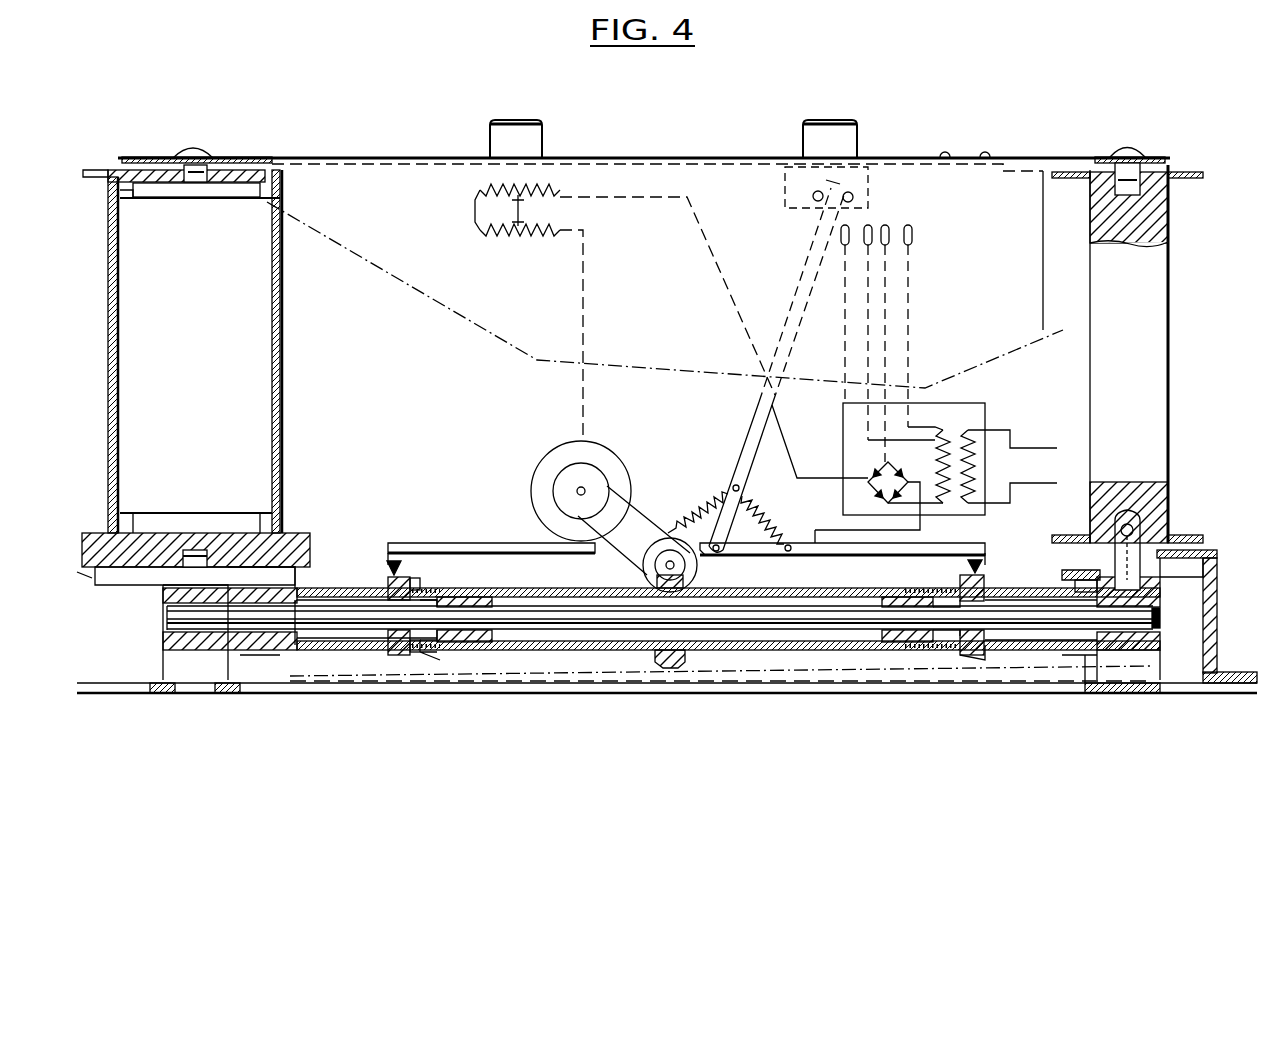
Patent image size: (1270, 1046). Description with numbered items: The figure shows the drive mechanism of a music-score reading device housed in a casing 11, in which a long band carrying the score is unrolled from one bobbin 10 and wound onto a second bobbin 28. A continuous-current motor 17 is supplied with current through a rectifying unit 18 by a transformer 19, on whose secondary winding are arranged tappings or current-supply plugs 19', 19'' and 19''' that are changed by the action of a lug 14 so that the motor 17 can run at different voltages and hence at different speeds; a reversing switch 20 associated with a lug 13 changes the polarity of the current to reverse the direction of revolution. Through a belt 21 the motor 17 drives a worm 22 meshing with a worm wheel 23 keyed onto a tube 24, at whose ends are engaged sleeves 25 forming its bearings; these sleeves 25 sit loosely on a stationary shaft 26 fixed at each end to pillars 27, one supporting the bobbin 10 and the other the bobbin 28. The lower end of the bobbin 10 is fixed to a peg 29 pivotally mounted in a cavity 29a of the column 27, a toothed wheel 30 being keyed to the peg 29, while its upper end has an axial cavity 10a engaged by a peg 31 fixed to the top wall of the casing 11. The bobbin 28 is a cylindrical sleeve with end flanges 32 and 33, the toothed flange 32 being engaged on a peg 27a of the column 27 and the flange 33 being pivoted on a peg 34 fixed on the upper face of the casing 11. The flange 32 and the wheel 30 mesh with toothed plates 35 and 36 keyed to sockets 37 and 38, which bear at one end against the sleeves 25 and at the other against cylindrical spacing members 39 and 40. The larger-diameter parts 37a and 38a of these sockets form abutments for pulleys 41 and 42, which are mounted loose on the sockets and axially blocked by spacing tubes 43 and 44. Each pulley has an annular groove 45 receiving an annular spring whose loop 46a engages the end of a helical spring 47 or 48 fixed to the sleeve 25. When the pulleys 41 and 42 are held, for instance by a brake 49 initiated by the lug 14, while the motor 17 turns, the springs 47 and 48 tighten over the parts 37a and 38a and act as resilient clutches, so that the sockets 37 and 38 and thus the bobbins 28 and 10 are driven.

The bobbin 10 is at (1160, 387).
The axial cavity 10a is at (1168, 205).
The casing 11 is at (330, 157).
The lug 13 is at (538, 140).
The lug 14 is at (855, 138).
The continuous-current motor 17 is at (604, 456).
The rectifying unit 18 is at (872, 470).
The transformer 19 is at (936, 458).
The tapping 19' is at (924, 326).
The tapping 19'' is at (908, 343).
The tapping 19''' is at (831, 314).
The reversing switch 20 is at (512, 226).
The belt 21 is at (638, 512).
The worm 22 is at (670, 548).
The worm wheel 23 is at (668, 668).
The tube 24 is at (760, 652).
The sleeves 25 is at (480, 642).
The stationary shaft 26 is at (205, 690).
The pillars 27 is at (175, 672).
The peg 27a is at (195, 549).
The bobbin 28 is at (108, 356).
The peg 29 is at (1150, 540).
The cavity 29a is at (1100, 576).
The toothed wheel 30 is at (1217, 555).
The peg 31 is at (1148, 162).
The flange 32 is at (110, 533).
The flange 33 is at (125, 188).
The bolt 34 is at (195, 168).
The toothed plate 35 is at (300, 670).
The toothed plate 36 is at (1052, 660).
The socket 37 is at (338, 660).
The part of socket 37a is at (435, 657).
The socket 38 is at (985, 657).
The part of socket 38a is at (935, 652).
The cylindrical spacing member 39 is at (258, 660).
The cylindrical spacing member 40 is at (1075, 657).
The pulley 41 is at (392, 665).
The pulley 42 is at (985, 587).
The spacing tube 43 is at (350, 588).
The spacing tube 44 is at (1035, 652).
The annular groove 45 is at (400, 656).
The loop 46a is at (395, 570).
The helical spring 47 is at (445, 582).
The helical spring 48 is at (935, 586).
The brake 49 is at (795, 543).